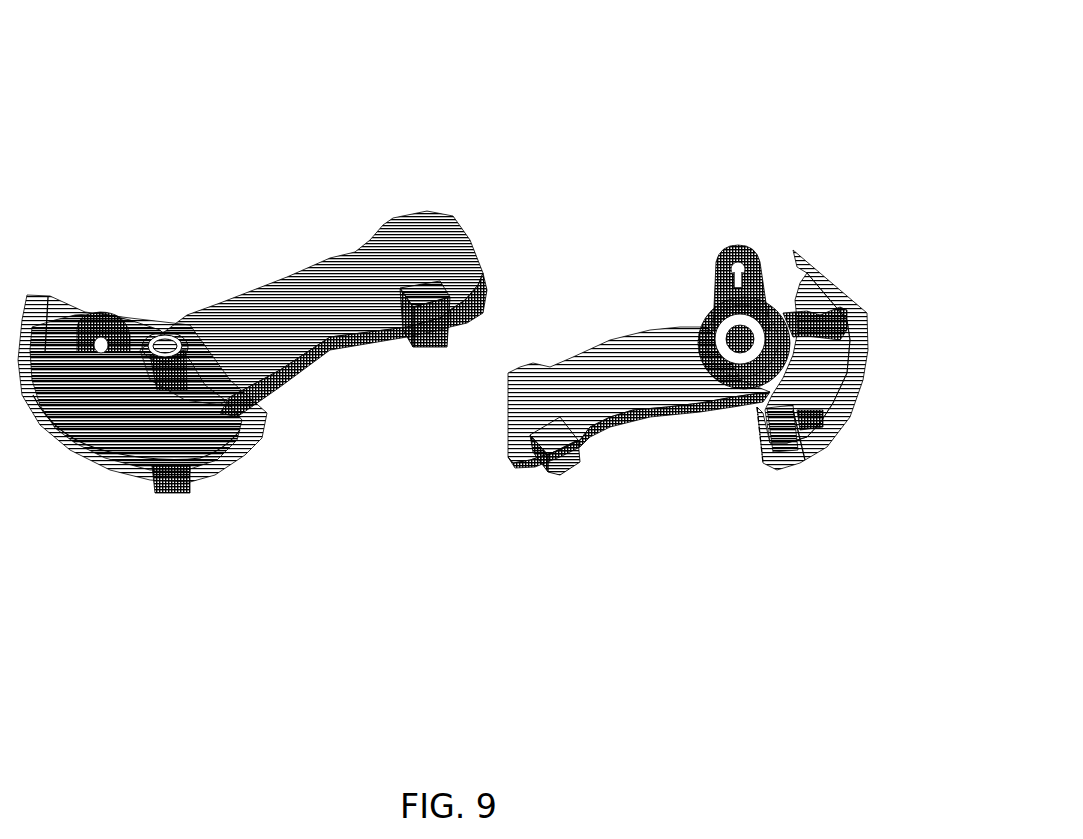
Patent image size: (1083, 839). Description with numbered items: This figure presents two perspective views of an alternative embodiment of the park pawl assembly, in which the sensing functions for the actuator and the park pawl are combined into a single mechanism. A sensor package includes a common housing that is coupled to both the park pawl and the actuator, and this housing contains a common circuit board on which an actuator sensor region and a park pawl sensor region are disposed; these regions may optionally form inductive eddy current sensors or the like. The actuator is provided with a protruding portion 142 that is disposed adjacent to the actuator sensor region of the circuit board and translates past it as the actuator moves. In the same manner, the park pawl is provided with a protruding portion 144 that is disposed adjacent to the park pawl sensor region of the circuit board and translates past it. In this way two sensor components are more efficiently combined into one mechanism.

The protruding portion 142 is at (837, 303).
The protruding portion 144 is at (785, 423).